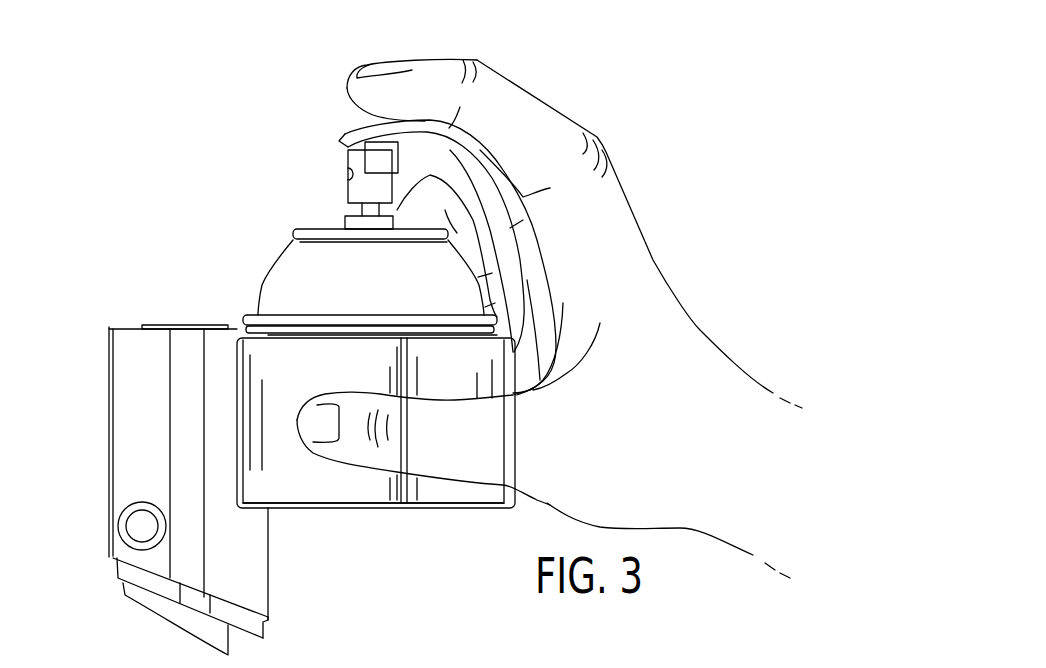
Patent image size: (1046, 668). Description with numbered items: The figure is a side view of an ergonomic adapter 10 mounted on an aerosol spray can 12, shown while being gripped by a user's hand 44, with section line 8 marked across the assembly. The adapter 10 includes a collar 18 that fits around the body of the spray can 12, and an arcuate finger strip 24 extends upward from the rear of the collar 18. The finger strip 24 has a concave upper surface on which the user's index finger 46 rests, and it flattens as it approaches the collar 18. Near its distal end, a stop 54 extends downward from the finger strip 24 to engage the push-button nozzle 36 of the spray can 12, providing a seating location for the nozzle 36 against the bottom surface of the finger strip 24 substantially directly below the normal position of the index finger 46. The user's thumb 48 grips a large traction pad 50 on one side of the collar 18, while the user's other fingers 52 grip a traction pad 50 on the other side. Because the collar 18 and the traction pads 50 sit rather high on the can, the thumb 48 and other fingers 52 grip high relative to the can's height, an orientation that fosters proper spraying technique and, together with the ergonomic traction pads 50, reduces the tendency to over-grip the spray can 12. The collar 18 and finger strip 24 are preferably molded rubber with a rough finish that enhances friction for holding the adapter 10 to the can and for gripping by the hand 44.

The section line 8- 8 is at (137, 428).
The ergonomic adapter 10 is at (352, 493).
The aerosol spray can 12 is at (288, 290).
The collar 18 is at (272, 488).
The arcuate finger strip 24 is at (367, 130).
The push-button nozzle 36 is at (362, 193).
The user's hand 44 is at (670, 327).
The index finger 46 is at (520, 112).
The thumb 48 is at (470, 463).
The traction pad 50 is at (388, 497).
The other fingers 52 is at (373, 585).
The stop 54 is at (382, 158).